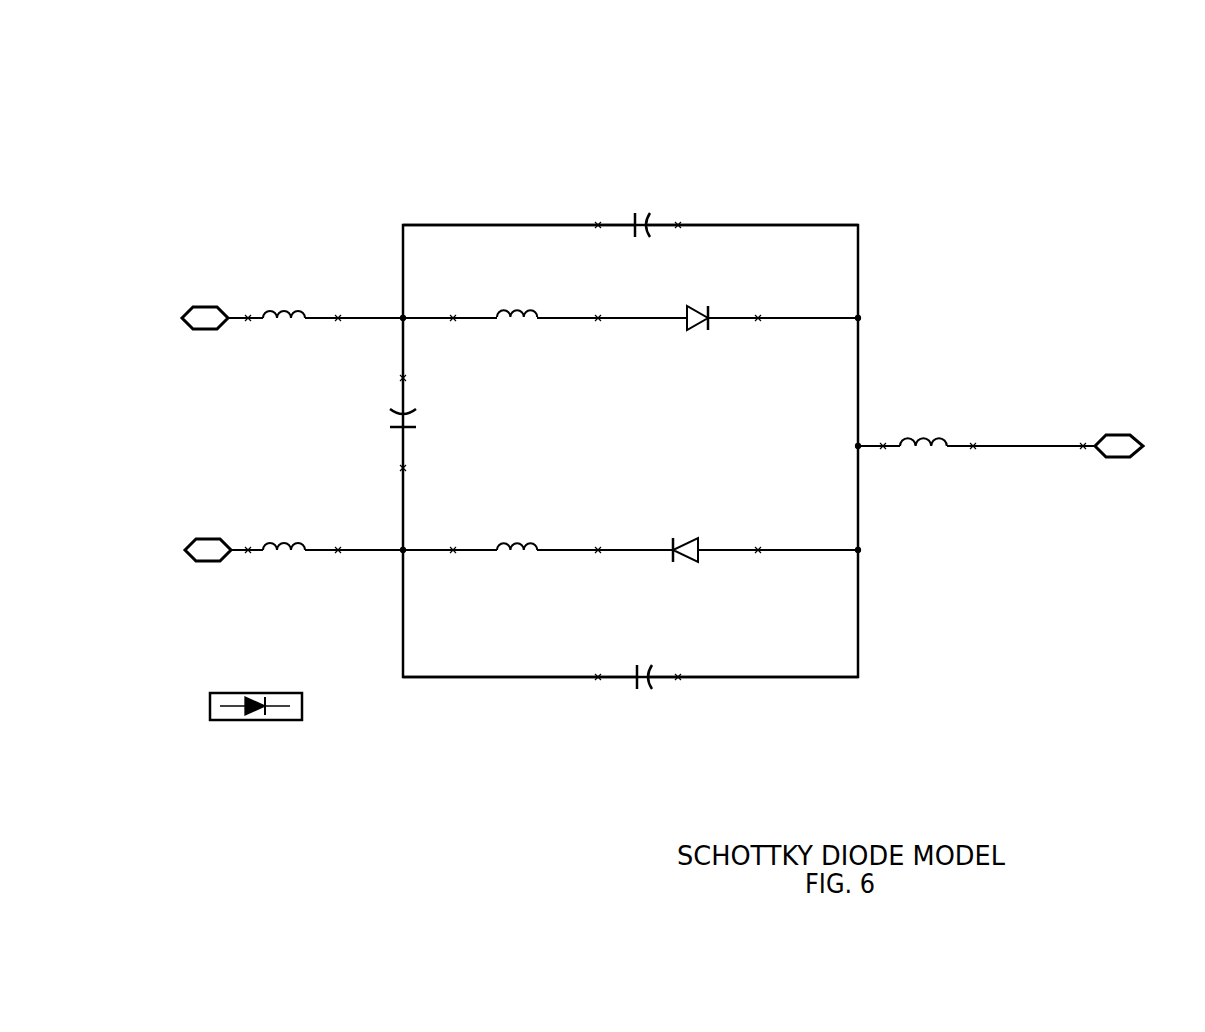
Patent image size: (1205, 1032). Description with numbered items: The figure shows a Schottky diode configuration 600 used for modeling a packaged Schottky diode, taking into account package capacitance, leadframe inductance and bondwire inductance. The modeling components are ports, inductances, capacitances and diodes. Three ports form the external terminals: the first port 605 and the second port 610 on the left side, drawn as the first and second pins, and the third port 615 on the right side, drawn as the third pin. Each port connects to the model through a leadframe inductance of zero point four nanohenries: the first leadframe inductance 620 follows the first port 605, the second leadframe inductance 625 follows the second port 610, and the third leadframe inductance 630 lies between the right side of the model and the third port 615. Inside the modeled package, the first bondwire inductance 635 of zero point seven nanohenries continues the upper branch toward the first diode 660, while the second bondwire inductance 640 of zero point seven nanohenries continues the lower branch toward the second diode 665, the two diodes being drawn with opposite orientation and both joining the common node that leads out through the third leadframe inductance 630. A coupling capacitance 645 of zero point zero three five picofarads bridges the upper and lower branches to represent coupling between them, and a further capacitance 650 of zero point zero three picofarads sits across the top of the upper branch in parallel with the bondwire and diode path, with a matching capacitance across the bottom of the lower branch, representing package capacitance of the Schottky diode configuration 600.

The Schottky diode configuration 600 is at (200, 105).
The Port 1 605 is at (208, 306).
The Port 2 610 is at (190, 556).
The Port 3 615 is at (1106, 435).
The leadframe inductance L1 620 is at (296, 305).
The leadframe inductance L2 625 is at (300, 553).
The leadframe inductance L6 630 is at (917, 442).
The bondwire inductance L3 635 is at (500, 312).
The bondwire inductance L4 640 is at (538, 553).
The coupling capacitance C1 645 is at (393, 433).
The capacitance C2 650 is at (628, 217).
The diode D1 660 is at (698, 305).
The diode D2 665 is at (660, 690).